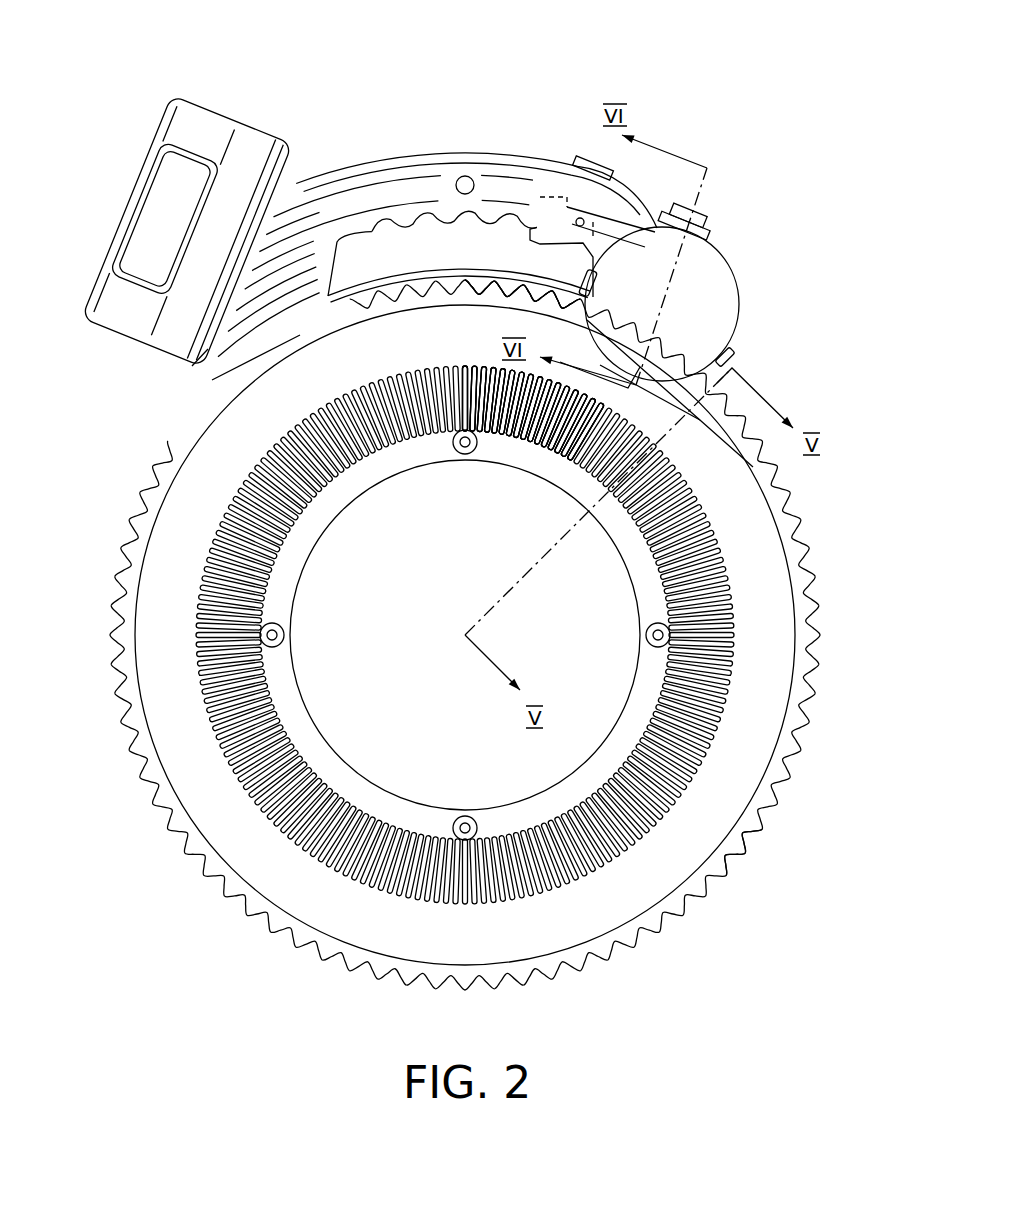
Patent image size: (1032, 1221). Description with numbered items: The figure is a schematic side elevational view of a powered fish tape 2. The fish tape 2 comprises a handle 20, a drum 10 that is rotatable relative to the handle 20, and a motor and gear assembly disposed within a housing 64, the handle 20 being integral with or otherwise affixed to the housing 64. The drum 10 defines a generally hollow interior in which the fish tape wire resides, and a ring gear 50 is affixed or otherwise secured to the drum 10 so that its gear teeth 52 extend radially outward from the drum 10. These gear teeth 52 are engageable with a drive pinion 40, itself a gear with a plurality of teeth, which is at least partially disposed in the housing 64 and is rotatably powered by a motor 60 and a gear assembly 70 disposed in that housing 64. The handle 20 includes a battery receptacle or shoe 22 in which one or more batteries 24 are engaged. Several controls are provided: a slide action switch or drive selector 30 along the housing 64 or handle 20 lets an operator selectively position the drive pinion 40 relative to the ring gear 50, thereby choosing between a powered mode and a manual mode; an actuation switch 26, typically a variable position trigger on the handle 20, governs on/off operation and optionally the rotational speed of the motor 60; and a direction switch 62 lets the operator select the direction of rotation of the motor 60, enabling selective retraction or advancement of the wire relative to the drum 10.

The fish tape 2 is at (747, 100).
The drum 10 is at (150, 637).
The handle 20 is at (392, 195).
The battery receptacle or shoe 22 is at (210, 352).
The battery 24 is at (160, 228).
The actuation switch 26 is at (548, 230).
The slide action switch or drive selector 30 is at (700, 218).
The drive pinion 40 is at (765, 320).
The ring gear 50 is at (822, 645).
The gear teeth 52 is at (731, 882).
The motor 60 is at (587, 283).
The direction switch 62 is at (597, 160).
The housing 64 is at (738, 272).
The gear assembly 70 is at (650, 392).